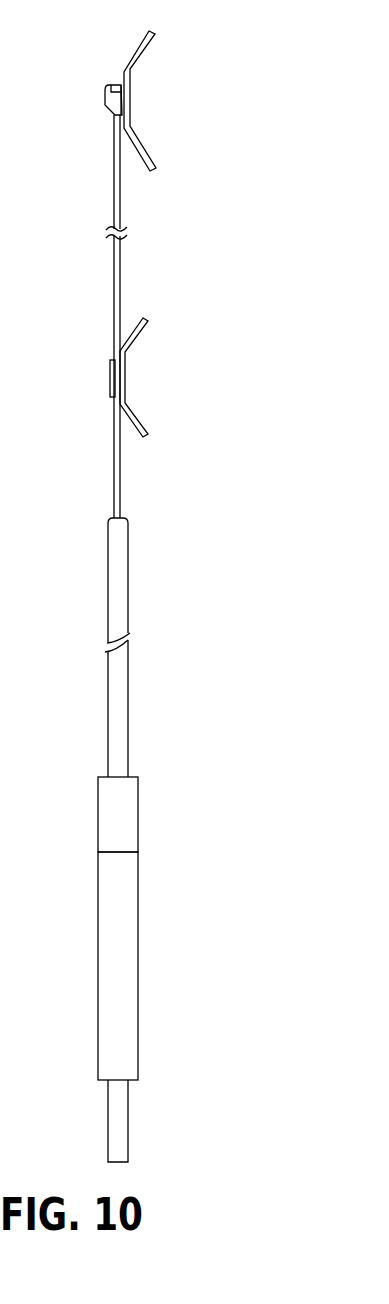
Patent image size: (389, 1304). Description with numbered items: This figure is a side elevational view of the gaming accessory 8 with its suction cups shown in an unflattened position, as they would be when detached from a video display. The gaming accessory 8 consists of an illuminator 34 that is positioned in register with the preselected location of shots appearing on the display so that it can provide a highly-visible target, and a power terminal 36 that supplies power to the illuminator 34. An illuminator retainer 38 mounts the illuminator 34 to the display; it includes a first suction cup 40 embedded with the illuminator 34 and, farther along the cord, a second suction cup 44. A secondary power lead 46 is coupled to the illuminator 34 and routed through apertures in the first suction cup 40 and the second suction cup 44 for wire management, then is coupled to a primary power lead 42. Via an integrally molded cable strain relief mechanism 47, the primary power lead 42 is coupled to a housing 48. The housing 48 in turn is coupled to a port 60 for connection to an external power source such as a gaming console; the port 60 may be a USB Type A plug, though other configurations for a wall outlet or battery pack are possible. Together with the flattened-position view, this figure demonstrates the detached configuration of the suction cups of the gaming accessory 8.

The gaming accessory 8 is at (23, 46).
The illuminator 34 is at (98, 80).
The power terminal 36 is at (168, 752).
The illuminator retainer 38 is at (172, 254).
The first suction cup 40 is at (138, 53).
The primary power lead 42 is at (117, 570).
The second suction cup 44 is at (137, 335).
The secondary power lead 46 is at (116, 202).
The cable strain relief mechanism 47 is at (110, 806).
The housing 48 is at (107, 932).
The port 60 is at (110, 1117).